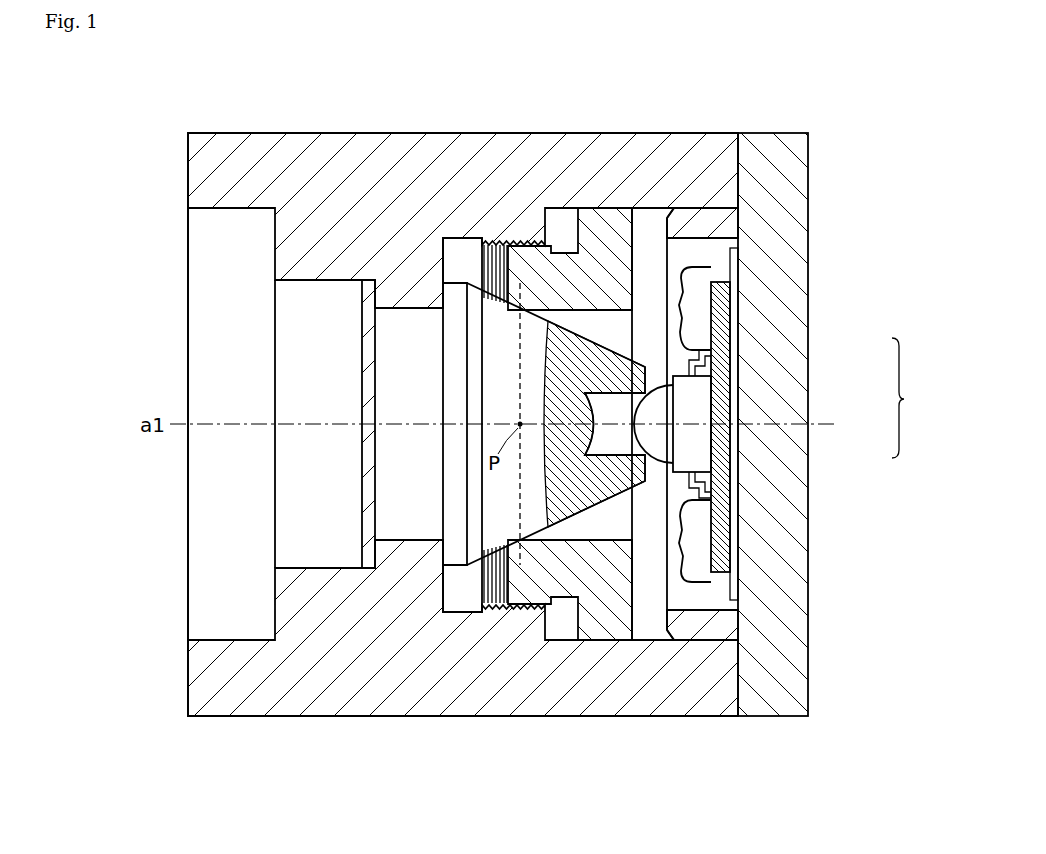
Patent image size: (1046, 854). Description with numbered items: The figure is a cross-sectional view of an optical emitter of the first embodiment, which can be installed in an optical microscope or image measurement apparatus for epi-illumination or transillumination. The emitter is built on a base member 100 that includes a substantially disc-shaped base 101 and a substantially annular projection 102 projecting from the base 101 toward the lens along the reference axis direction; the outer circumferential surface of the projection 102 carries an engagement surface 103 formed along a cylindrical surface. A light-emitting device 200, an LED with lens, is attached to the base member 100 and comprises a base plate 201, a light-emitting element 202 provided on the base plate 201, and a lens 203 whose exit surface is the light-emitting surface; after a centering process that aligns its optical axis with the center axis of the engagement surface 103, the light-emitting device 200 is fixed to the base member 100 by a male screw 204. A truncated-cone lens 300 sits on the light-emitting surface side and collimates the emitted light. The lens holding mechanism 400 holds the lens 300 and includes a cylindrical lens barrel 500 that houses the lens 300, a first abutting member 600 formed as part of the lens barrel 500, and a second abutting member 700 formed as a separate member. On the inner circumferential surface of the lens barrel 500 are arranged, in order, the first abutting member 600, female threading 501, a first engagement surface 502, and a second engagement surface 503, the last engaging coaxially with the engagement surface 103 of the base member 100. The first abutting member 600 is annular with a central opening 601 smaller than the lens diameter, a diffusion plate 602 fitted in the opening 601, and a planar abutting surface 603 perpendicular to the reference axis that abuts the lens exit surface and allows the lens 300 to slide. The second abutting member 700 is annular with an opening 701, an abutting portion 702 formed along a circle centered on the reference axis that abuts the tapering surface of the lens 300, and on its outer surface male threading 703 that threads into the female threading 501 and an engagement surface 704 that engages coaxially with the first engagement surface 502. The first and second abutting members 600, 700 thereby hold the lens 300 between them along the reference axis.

The base member 100 is at (858, 305).
The base 101 is at (778, 168).
The projection 102 is at (693, 228).
The engagement surface 103 is at (712, 205).
The light-emitting device 200 is at (806, 424).
The base plate 201 is at (713, 353).
The light-emitting element 202 is at (693, 400).
The lens 203 is at (660, 452).
The male screw 204 is at (697, 553).
The lens 300 is at (495, 366).
The lens holding mechanism 400 is at (150, 320).
The lens barrel 500 is at (366, 133).
The female threading 501 is at (514, 244).
The first engagement surface 502 is at (617, 213).
The second engagement surface 503 is at (690, 226).
The first abutting member 600 is at (332, 656).
The opening 601 is at (362, 522).
The diffusion plate 602 is at (355, 476).
The abutting surface 603 is at (460, 590).
The second abutting member 700 is at (637, 604).
The opening 701 is at (617, 620).
The abutting portion 702 is at (483, 612).
The male threading 703 is at (520, 598).
The engagement surface 704 is at (594, 642).